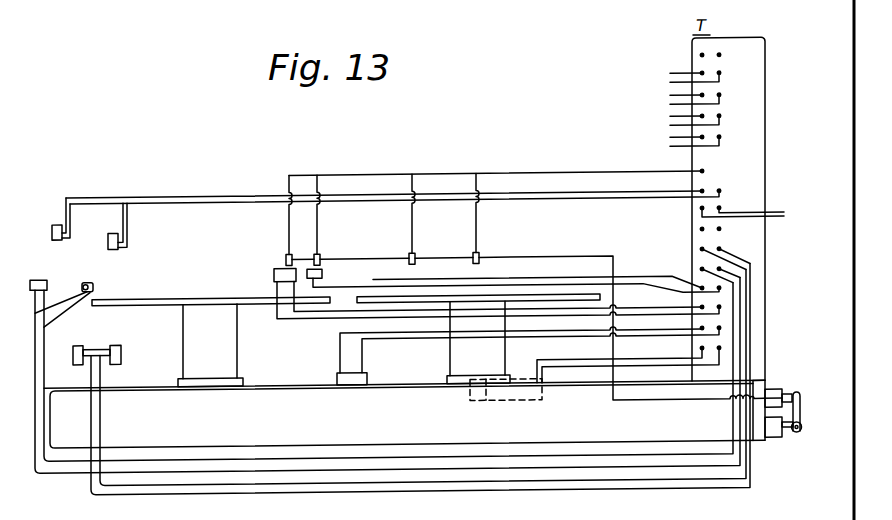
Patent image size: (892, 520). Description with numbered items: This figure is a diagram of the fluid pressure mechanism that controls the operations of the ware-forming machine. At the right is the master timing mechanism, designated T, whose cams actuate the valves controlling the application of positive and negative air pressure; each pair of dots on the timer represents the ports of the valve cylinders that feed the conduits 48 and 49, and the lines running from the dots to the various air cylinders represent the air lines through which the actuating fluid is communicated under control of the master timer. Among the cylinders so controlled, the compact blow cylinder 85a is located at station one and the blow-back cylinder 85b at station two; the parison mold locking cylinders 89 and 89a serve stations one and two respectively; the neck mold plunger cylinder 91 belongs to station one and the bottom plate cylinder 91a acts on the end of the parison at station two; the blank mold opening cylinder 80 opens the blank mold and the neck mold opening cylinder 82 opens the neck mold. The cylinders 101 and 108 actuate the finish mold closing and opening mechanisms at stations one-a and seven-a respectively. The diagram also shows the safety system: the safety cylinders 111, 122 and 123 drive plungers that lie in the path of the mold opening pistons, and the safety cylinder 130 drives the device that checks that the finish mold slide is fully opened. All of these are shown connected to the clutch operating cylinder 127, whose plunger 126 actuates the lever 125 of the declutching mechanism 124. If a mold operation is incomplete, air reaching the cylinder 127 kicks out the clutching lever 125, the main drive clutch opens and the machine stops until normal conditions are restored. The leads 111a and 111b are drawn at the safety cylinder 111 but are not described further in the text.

The conduit 48 is at (720, 53).
The conduit 49 is at (700, 54).
The blank mold opening cylinder 80 is at (274, 270).
The neck mold opening cylinder 82 is at (322, 270).
The compact blow cylinder 85a is at (53, 233).
The blow-back cylinder 85b is at (118, 239).
The parison mold locking cylinder 89 is at (46, 276).
The parison mold locking cylinder 89a is at (94, 280).
The neck mold plunger cylinder 91 is at (74, 346).
The bottom plate cylinder 91a is at (121, 351).
The finish mold closing cylinder 101 is at (337, 369).
The finish mold opening cylinder 108 is at (481, 396).
The safety cylinder 111 is at (416, 250).
The lead 111a is at (413, 226).
The lead 111b is at (421, 257).
The safety cylinder 122 is at (287, 251).
The safety cylinder 123 is at (321, 251).
The declutching mechanism 124 is at (778, 427).
The lever 125 is at (797, 434).
The plunger 126 is at (780, 397).
The clutch operating cylinder 127 is at (770, 387).
The safety cylinder 130 is at (480, 251).